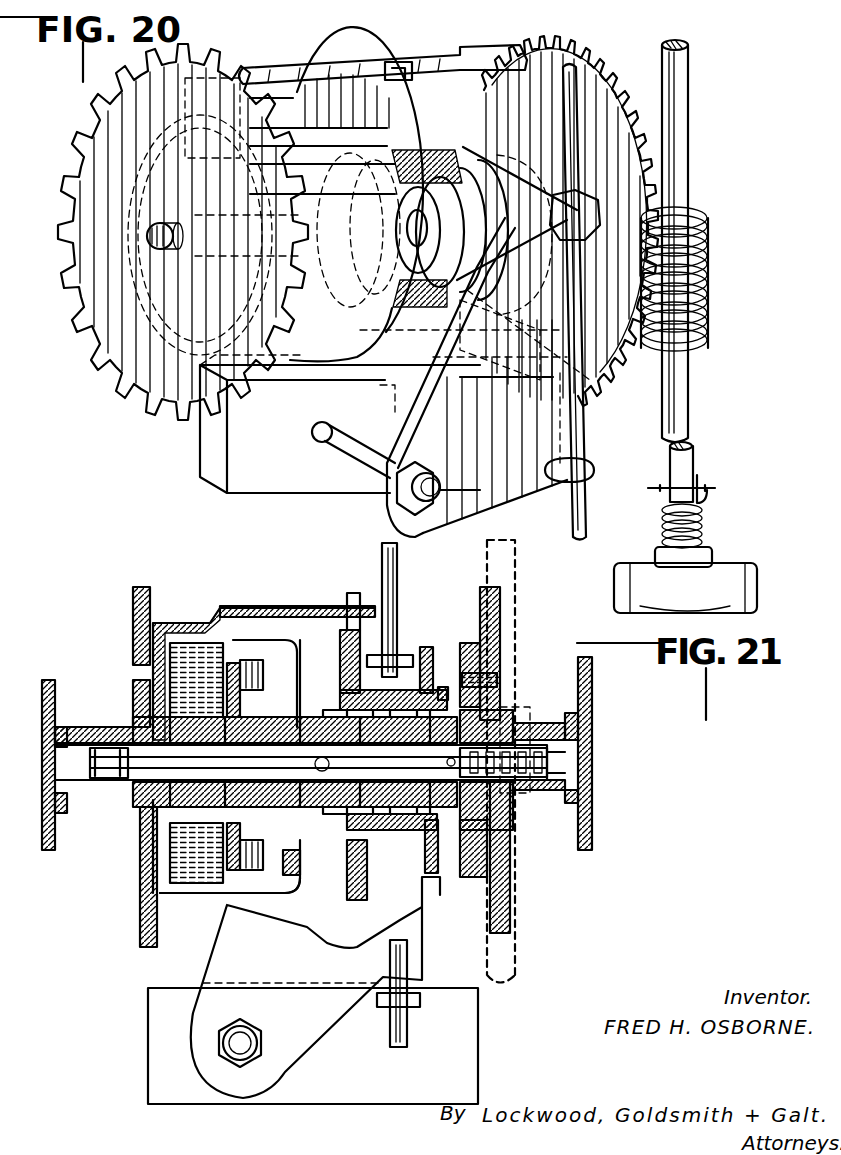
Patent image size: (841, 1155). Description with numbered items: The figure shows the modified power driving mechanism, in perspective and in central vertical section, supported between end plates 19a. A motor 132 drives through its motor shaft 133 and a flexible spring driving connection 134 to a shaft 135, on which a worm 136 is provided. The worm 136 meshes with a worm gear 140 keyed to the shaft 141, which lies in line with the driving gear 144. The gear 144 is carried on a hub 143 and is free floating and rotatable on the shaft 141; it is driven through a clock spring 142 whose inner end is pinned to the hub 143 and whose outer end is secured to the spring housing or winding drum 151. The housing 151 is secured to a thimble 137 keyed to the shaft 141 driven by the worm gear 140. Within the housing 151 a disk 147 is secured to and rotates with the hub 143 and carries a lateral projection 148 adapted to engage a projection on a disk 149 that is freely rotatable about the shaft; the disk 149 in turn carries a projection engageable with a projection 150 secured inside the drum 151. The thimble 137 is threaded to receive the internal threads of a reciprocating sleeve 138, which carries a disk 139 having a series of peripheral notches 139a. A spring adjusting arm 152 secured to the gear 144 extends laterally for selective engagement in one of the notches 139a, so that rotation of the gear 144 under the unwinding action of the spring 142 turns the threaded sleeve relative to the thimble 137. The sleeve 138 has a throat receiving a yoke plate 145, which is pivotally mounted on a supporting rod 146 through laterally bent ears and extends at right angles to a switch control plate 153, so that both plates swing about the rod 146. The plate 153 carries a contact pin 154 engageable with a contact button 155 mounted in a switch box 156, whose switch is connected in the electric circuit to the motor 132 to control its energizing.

In FIG. 21, the end plate 19a is at (43, 700).
In FIG. 20, the motor 132 is at (728, 579).
In FIG. 20, the motor shaft 133 is at (667, 547).
In FIG. 20, the flexible spring driving connection 134 is at (665, 517).
In FIG. 20, the shaft 135 is at (693, 455).
In FIG. 21, the shaft 135 is at (515, 955).
In FIG. 20, the worm 136 is at (710, 280).
In FIG. 21, the worm 136 is at (523, 707).
In FIG. 20, the thimble 137 is at (540, 95).
In FIG. 21, the thimble 137 is at (468, 690).
In FIG. 20, the reciprocating sleeve 138 is at (467, 133).
In FIG. 21, the reciprocating sleeve 138 is at (425, 647).
In FIG. 20, the disk 139 is at (405, 140).
In FIG. 21, the disk 139 is at (345, 630).
In FIG. 20, the peripheral notches 139a is at (396, 62).
In FIG. 21, the peripheral notches 139a is at (353, 593).
In FIG. 20, the worm gear 140 is at (588, 74).
In FIG. 21, the worm gear 140 is at (495, 612).
In FIG. 20, the shaft 141 is at (158, 252).
In FIG. 21, the shaft 141 is at (118, 778).
In FIG. 21, the clock spring 142 is at (183, 648).
In FIG. 21, the hub 143 is at (150, 728).
In FIG. 20, the driving gear 144 is at (87, 172).
In FIG. 21, the driving gear 144 is at (135, 630).
In FIG. 20, the yoke plate 145 is at (545, 187).
In FIG. 21, the yoke plate 145 is at (442, 687).
In FIG. 20, the supporting rod 146 is at (584, 463).
In FIG. 21, the supporting rod 146 is at (397, 592).
In FIG. 21, the disk 147 is at (230, 700).
In FIG. 21, the lateral projection 148 is at (238, 685).
In FIG. 21, the disk 149 is at (283, 885).
In FIG. 21, the projection 150 is at (300, 852).
In FIG. 20, the spring housing 151 is at (325, 135).
In FIG. 21, the spring housing 151 is at (265, 715).
In FIG. 20, the spring adjusting arm 152 is at (297, 62).
In FIG. 21, the spring adjusting arm 152 is at (297, 606).
In FIG. 20, the switch control plate 153 is at (503, 470).
In FIG. 21, the switch control plate 153 is at (287, 1058).
In FIG. 20, the contact pin 154 is at (360, 458).
In FIG. 21, the contact pin 154 is at (243, 1057).
In FIG. 20, the contact button 155 is at (312, 435).
In FIG. 20, the switch box 156 is at (230, 466).
In FIG. 21, the switch box 156 is at (187, 1096).